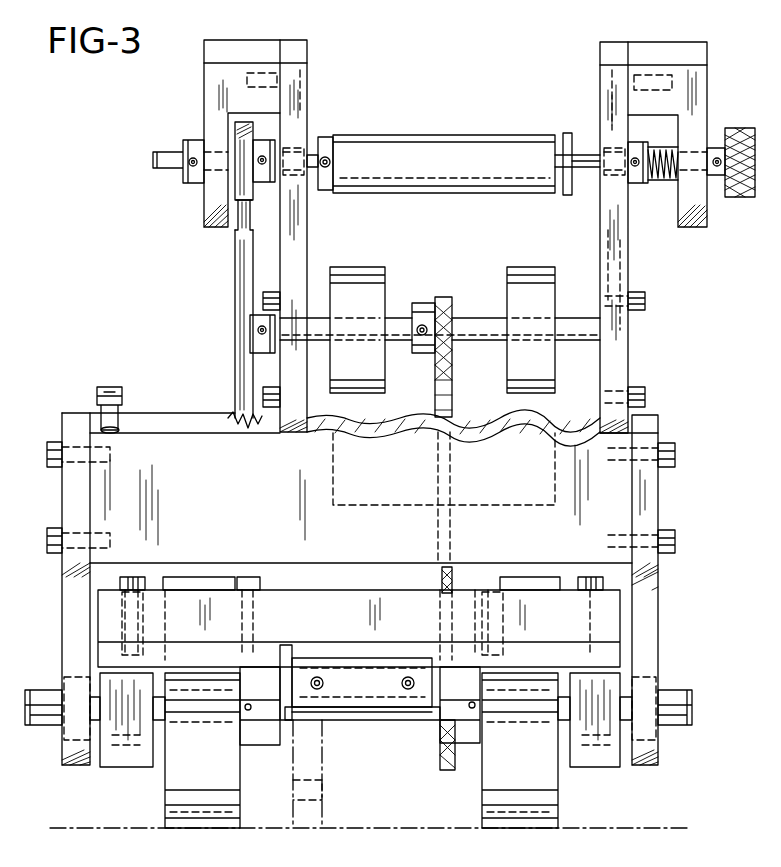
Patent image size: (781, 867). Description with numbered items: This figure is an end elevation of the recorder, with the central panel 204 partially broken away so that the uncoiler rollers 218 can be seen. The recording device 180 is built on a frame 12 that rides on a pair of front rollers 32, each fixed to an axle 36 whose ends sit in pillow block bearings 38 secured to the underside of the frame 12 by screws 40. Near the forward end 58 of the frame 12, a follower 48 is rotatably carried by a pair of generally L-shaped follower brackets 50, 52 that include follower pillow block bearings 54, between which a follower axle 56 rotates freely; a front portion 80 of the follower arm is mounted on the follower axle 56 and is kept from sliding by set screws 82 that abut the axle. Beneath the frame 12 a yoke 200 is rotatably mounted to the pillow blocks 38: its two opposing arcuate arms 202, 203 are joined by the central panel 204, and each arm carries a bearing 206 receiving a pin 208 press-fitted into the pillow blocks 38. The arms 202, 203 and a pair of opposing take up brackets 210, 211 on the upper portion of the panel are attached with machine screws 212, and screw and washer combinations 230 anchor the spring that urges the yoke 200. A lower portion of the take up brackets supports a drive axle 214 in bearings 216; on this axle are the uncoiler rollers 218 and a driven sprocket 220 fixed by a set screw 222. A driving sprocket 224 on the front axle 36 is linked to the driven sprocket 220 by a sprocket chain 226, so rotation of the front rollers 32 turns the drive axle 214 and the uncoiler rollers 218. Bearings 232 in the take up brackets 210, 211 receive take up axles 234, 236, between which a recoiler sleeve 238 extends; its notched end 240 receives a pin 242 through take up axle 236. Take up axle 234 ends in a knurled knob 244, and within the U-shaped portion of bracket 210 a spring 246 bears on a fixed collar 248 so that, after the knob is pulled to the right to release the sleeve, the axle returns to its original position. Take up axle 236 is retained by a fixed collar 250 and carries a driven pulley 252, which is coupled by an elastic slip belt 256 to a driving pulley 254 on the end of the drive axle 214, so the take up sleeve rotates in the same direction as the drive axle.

The frame 12 is at (290, 590).
The front rollers 32 is at (215, 818).
The axle 36 is at (390, 716).
The pillow block bearings 38 is at (128, 757).
The screws 40 is at (135, 577).
The follower 48 is at (367, 720).
The follower bracket 50 is at (505, 658).
The follower bracket 52 is at (190, 657).
The follower pillow block bearings 54 is at (272, 746).
The follower axle 56 is at (287, 655).
The forward end 58 is at (347, 619).
The front portion 80 is at (342, 708).
The set screws 82 is at (402, 683).
The recording device 180 is at (690, 390).
The yoke 200 is at (665, 515).
The arcuate arm 202 is at (650, 642).
The arcuate arm 203 is at (75, 612).
The central panel 204 is at (255, 476).
The bearing 206 is at (83, 648).
The pin 208 is at (45, 725).
The take up bracket 210 is at (622, 257).
The take up bracket 211 is at (305, 88).
The machine screws 212 is at (647, 300).
The drive axle 214 is at (478, 318).
The bearings 216 is at (235, 275).
The uncoiler rollers 218 is at (365, 267).
The driven sprocket 220 is at (428, 303).
The set screw 222 is at (420, 338).
The driving sprocket 224 is at (443, 765).
The sprocket chain 226 is at (453, 372).
The screw and washer combinations 230 is at (110, 387).
The bearings 232 is at (310, 185).
The take up axle 234 is at (582, 155).
The take up axle 236 is at (315, 152).
The recoiler sleeve 238 is at (560, 135).
The notched end 240 is at (340, 137).
The pin 242 is at (332, 165).
The knurled knob 244 is at (740, 197).
The spring 246 is at (660, 165).
The fixed collar 248 is at (638, 142).
The fixed collar 250 is at (193, 140).
The driven pulley 252 is at (237, 180).
The driving pulley 254 is at (240, 370).
The elastic slip belt 256 is at (238, 215).